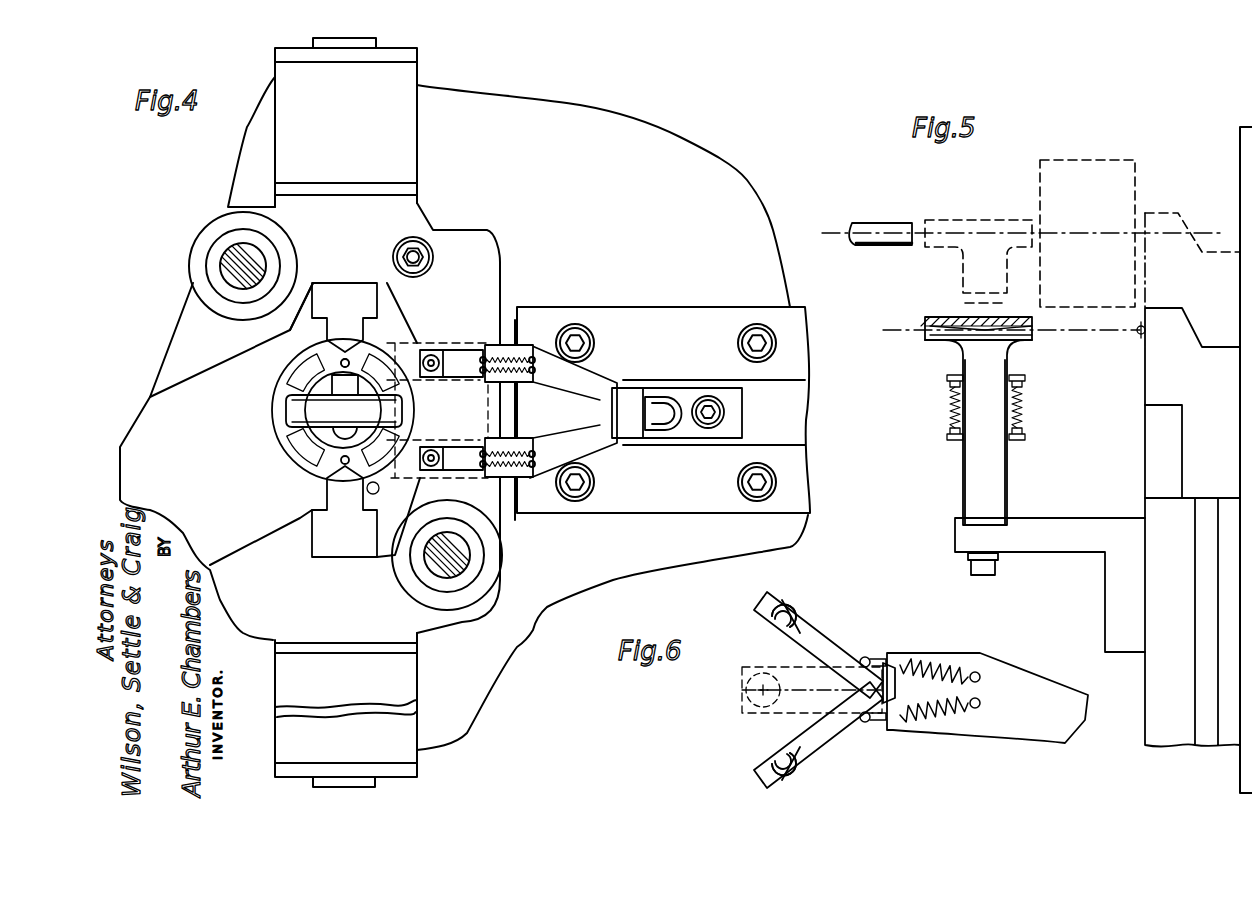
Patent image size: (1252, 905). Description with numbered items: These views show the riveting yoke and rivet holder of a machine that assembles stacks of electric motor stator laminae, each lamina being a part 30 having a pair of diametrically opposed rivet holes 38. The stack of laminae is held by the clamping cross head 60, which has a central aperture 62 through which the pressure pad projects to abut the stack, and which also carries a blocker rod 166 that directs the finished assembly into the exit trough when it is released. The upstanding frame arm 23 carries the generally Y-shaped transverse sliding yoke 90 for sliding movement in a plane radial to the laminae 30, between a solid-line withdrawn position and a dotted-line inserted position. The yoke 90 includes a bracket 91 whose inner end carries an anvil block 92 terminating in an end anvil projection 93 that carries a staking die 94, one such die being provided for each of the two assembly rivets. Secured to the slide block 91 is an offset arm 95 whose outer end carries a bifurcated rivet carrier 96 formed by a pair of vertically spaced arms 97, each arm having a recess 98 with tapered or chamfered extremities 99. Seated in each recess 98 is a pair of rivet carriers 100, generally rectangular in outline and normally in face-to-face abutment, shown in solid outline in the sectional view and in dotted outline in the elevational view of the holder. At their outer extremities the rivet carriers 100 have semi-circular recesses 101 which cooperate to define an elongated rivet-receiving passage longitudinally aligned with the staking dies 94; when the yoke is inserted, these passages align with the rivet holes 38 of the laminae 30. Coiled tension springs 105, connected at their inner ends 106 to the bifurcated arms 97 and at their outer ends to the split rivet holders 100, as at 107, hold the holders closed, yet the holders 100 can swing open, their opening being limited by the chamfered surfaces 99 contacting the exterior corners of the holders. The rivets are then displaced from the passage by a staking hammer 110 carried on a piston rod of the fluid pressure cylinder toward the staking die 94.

In FIG. 5, the upstanding arm 23 is at (1243, 765).
In FIG. 4, the part 30 is at (398, 343).
In FIG. 5, the part 30 is at (1115, 188).
In FIG. 4, the rivet hole 38 is at (344, 360).
In FIG. 4, the clamping cross head 60 is at (507, 277).
In FIG. 4, the central aperture 62 is at (393, 305).
In FIG. 5, the transverse sliding yoke 90 is at (1097, 572).
In FIG. 5, the bracket 91 is at (1157, 710).
In FIG. 5, the anvil block 92 is at (1195, 450).
In FIG. 5, the end anvil projection 93 is at (1178, 327).
In FIG. 5, the staking die 94 is at (1138, 333).
In FIG. 4, the offset arm 95 is at (636, 393).
In FIG. 5, the offset arm 95 is at (1068, 526).
In FIG. 4, the bifurcated rivet carrier 96 is at (609, 372).
In FIG. 5, the bifurcated rivet carrier 96 is at (995, 472).
In FIG. 4, the vertically spaced arm 97 is at (532, 346).
In FIG. 5, the vertically spaced arm 97 is at (997, 358).
In FIG. 6, the vertically spaced arm 97 is at (995, 665).
In FIG. 6, the recess 98 is at (897, 687).
In FIG. 6, the chamfered extremity 99 is at (882, 655).
In FIG. 5, the rivet carrier 100 is at (953, 341).
In FIG. 6, the rivet carrier 100 is at (818, 623).
In FIG. 5, the semi-circular recess 101 is at (962, 323).
In FIG. 6, the semi-circular recess 101 is at (787, 604).
In FIG. 6, the coiled tension spring 105 is at (942, 667).
In FIG. 6, the inner end 106 is at (980, 677).
In FIG. 6, the outer end connection 107 is at (864, 657).
In FIG. 5, the staking hammer 110 is at (880, 225).
In FIG. 4, the blocker rod 166 is at (380, 488).